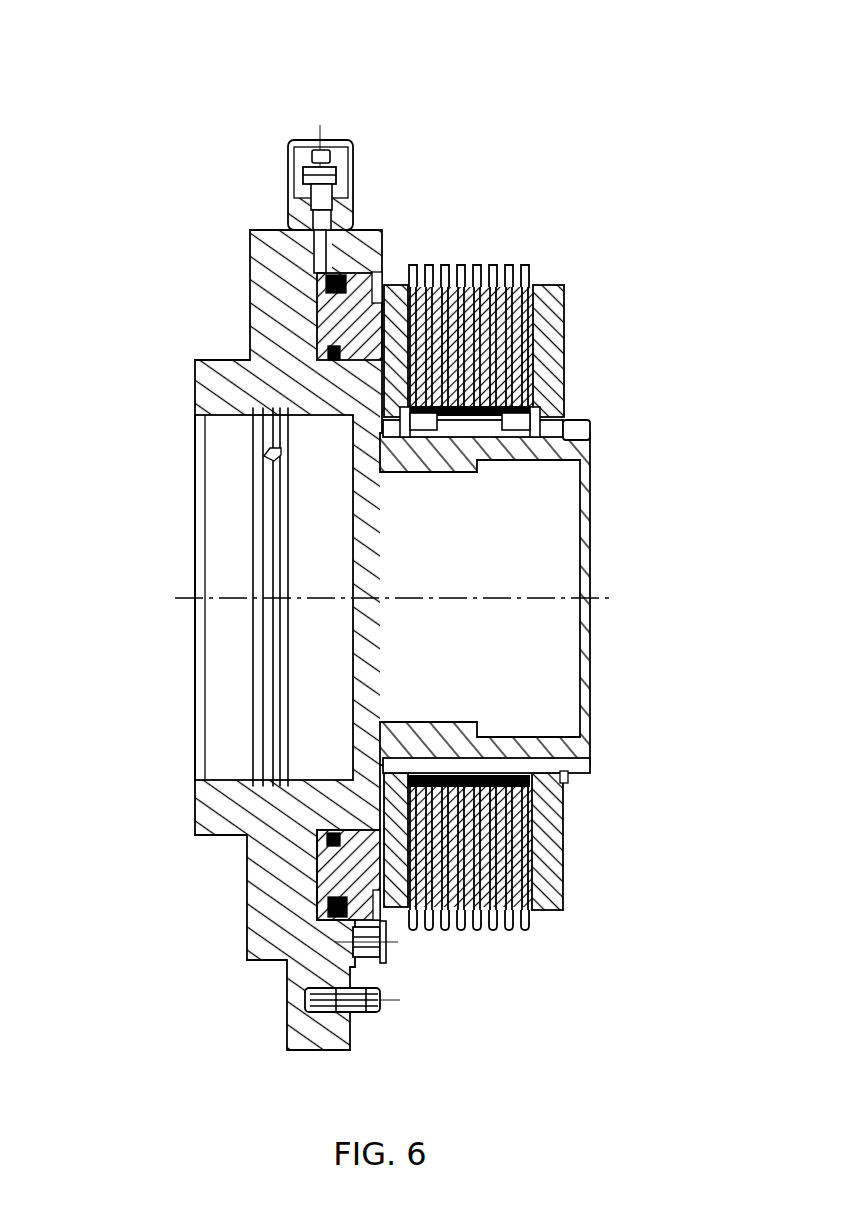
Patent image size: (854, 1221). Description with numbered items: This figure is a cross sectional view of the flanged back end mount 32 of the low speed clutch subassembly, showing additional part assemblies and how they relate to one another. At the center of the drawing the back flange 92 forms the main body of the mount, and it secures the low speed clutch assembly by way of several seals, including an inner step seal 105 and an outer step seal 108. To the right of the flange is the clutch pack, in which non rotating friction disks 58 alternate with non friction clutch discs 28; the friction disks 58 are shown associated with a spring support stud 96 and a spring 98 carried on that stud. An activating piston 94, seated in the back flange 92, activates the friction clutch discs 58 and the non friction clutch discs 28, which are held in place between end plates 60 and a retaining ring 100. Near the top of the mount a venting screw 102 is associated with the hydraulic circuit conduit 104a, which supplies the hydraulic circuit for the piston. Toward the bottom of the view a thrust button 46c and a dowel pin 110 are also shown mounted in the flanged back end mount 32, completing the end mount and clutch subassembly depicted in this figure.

The non friction clutch discs 28 is at (416, 288).
The flanged back end mount 32 is at (150, 522).
The thrust button 46c is at (355, 942).
The non rotating friction disks 58 is at (446, 288).
The end plates 60 is at (566, 330).
The back flange 92 is at (250, 322).
The activating piston 94 is at (357, 861).
The spring support stud 96 is at (491, 288).
The spring 98 is at (546, 290).
The retaining ring 100 is at (560, 412).
The venting screw 102 is at (305, 170).
The hydraulic circuit conduit 104a is at (310, 253).
The inner step seal 105 is at (322, 832).
The outer step seal 108 is at (330, 905).
The dowel pin 110 is at (318, 985).